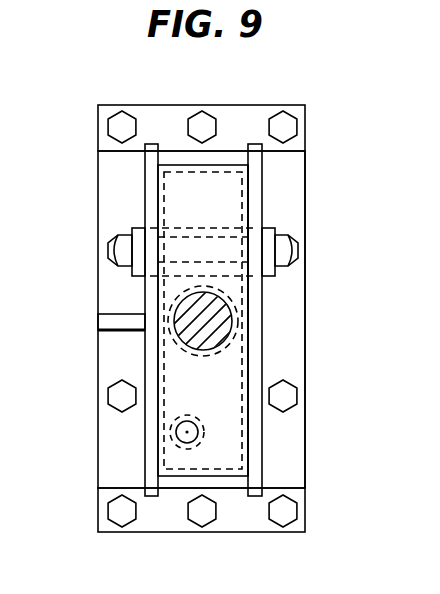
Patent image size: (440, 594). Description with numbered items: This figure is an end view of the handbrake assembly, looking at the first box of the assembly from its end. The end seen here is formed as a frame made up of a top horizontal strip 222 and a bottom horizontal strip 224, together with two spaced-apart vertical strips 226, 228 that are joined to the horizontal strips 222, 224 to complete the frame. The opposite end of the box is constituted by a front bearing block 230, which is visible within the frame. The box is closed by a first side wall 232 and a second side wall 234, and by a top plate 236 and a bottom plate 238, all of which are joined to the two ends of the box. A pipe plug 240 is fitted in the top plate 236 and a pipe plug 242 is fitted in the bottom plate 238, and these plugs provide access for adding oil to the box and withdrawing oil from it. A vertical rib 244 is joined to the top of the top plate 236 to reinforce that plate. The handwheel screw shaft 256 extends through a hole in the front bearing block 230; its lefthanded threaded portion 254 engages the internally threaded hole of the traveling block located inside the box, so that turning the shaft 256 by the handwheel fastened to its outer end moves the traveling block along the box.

The top horizontal strip 222 is at (112, 348).
The bottom horizontal strip 224 is at (295, 197).
The vertical strip 226 is at (253, 108).
The vertical strip 228 is at (160, 523).
The front bearing block 230 is at (205, 394).
The first side wall 232 is at (172, 160).
The second side wall 234 is at (230, 483).
The top plate 236 is at (150, 190).
The bottom plate 238 is at (258, 368).
The pipe plug 240 is at (138, 267).
The pipe plug 242 is at (283, 250).
The vertical rib 244 is at (105, 323).
The lefthanded threaded portion 254 is at (238, 307).
The handwheel screw shaft 256 is at (230, 330).